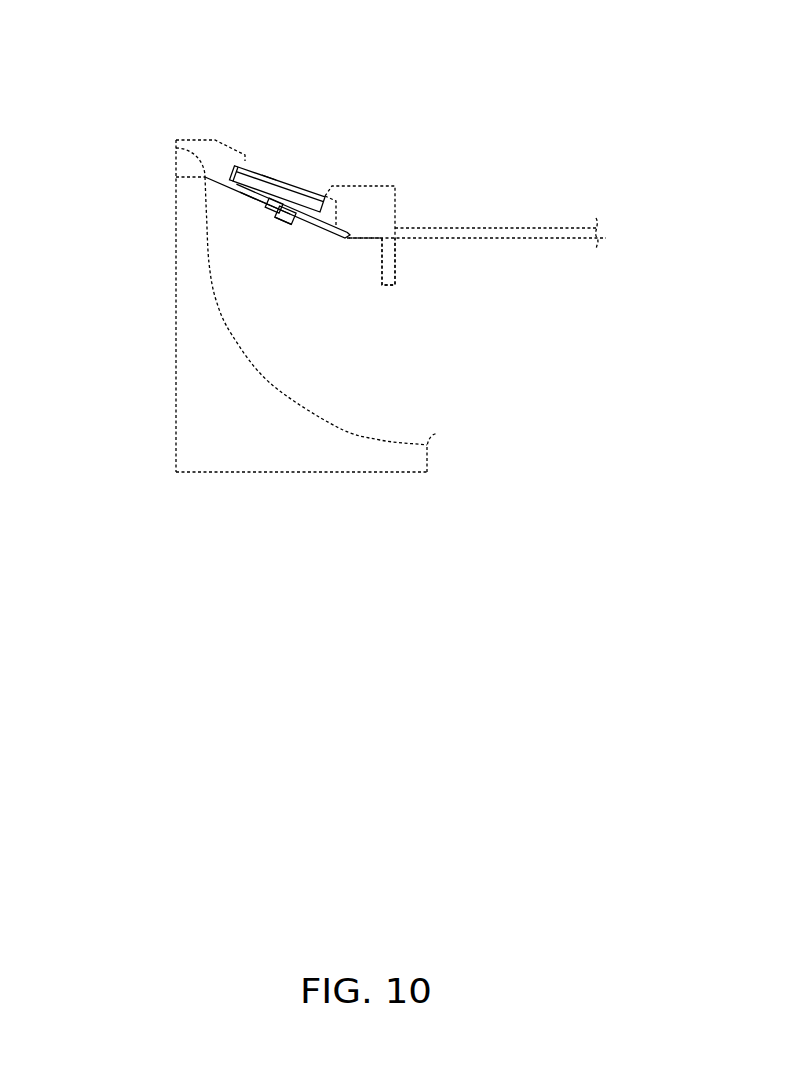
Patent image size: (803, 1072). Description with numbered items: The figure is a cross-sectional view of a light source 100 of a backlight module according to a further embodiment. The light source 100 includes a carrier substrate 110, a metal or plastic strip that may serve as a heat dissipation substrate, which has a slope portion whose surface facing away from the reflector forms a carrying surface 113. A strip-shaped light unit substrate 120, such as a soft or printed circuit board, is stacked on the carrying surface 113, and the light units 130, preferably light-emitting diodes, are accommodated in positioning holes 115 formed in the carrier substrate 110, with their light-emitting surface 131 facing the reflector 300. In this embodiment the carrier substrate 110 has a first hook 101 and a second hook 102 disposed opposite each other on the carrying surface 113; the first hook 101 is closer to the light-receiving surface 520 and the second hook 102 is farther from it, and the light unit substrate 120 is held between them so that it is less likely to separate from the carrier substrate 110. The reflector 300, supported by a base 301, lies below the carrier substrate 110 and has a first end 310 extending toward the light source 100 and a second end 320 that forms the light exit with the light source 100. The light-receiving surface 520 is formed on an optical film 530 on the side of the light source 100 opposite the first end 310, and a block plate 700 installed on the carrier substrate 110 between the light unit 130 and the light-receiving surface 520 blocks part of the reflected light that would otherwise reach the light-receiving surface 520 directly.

The light source 100 is at (365, 79).
The first hook 101 is at (380, 187).
The second hook 102 is at (227, 162).
The carrier substrate 110 is at (346, 239).
The carrying surface 113 is at (255, 178).
The positioning holes 115 is at (268, 210).
The light unit substrate 120 is at (273, 180).
The light unit 130 is at (289, 190).
The light-emitting surface 131 is at (278, 222).
The reflector 300 is at (283, 397).
The base 301 is at (305, 453).
The first end 310 is at (218, 143).
The second end 320 is at (437, 434).
The light-receiving surface 520 is at (557, 238).
The optical film 530 is at (525, 233).
The block plate 700 is at (390, 260).